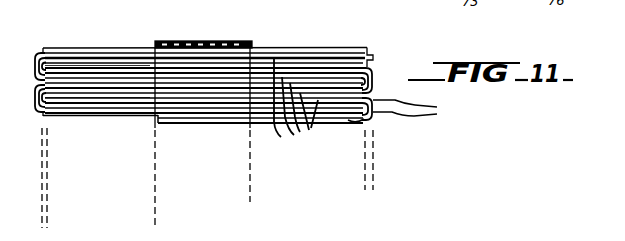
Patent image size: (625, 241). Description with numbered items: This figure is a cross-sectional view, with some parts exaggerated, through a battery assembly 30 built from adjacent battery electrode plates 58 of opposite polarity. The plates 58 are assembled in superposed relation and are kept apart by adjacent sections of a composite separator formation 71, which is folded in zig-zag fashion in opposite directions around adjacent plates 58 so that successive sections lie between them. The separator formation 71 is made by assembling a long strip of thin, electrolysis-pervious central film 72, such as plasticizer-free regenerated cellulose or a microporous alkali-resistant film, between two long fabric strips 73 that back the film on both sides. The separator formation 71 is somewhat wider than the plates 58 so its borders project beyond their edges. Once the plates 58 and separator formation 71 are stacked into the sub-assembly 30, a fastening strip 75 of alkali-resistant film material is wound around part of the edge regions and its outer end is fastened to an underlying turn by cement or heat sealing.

The battery assembly 30 is at (346, 44).
The battery electrode plates 58 is at (72, 65).
The separator formation 71 is at (296, 109).
The central film 72 is at (370, 113).
The layer of fabric 73 is at (416, 110).
The fastening strip 75 is at (221, 41).